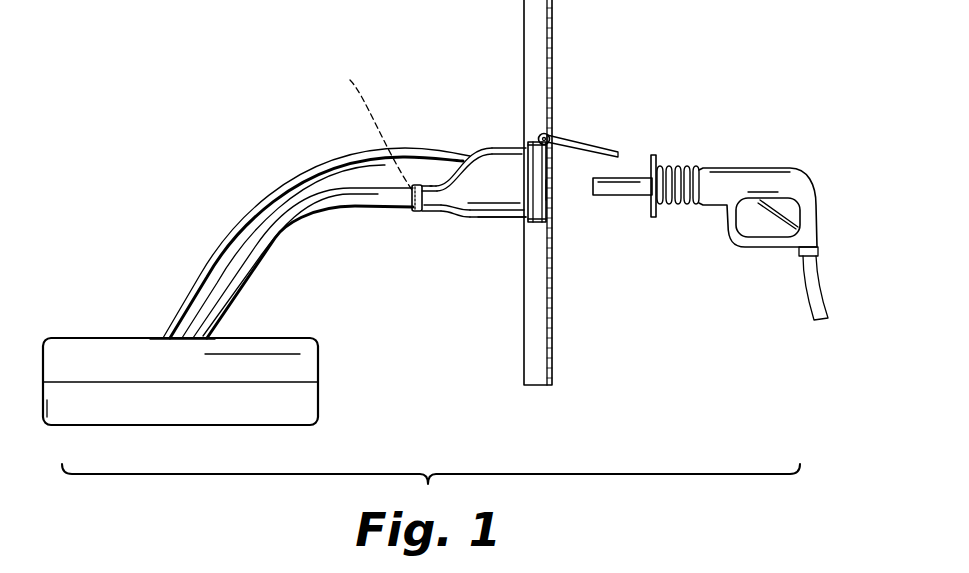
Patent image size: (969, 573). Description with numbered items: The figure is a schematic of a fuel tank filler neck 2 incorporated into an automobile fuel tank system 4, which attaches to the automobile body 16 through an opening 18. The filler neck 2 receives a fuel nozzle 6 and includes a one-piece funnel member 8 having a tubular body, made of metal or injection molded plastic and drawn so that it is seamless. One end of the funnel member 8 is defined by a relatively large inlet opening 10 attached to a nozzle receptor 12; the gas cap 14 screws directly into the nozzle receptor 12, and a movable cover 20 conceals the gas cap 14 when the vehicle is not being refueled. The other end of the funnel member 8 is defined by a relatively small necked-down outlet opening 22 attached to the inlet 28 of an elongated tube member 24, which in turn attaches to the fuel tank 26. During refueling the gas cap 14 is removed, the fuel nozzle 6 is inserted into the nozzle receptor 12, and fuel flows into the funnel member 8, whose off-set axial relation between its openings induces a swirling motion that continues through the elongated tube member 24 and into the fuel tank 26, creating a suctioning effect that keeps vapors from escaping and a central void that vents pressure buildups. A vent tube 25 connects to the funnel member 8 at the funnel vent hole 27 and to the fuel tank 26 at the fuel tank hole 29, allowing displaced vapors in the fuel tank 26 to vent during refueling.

The fuel tank filler neck 2 is at (447, 255).
The automobile fuel tank system 4 is at (427, 395).
The fuel nozzle 6 is at (718, 207).
The one-piece funnel member 8 is at (443, 223).
The inlet opening 10 is at (500, 150).
The nozzle receptor 12 is at (525, 217).
The gas cap 14 is at (550, 190).
The automobile body 16 is at (552, 62).
The opening 18 is at (527, 165).
The movable cover 20 is at (590, 130).
The outlet opening 22 is at (365, 125).
The elongated tube member 24 is at (262, 268).
The vent tube 25 is at (258, 202).
The fuel tank 26 is at (80, 338).
The funnel vent hole 27 is at (470, 157).
The inlet of elongated tubular member 28 is at (417, 213).
The fuel tank hole 29 is at (157, 338).